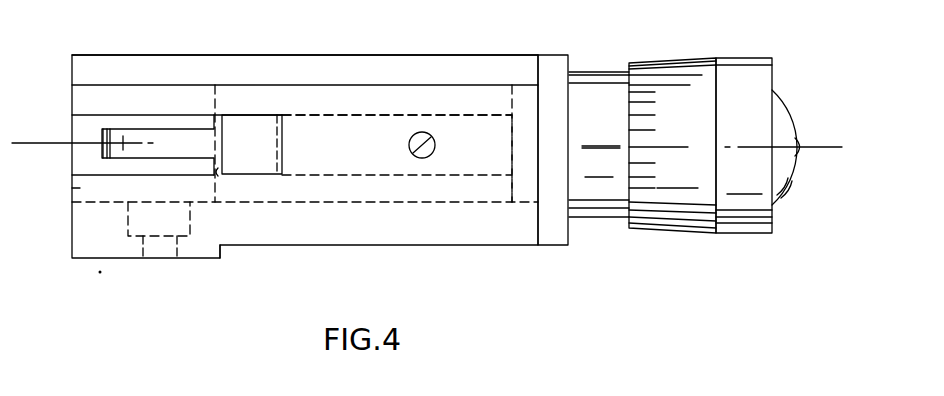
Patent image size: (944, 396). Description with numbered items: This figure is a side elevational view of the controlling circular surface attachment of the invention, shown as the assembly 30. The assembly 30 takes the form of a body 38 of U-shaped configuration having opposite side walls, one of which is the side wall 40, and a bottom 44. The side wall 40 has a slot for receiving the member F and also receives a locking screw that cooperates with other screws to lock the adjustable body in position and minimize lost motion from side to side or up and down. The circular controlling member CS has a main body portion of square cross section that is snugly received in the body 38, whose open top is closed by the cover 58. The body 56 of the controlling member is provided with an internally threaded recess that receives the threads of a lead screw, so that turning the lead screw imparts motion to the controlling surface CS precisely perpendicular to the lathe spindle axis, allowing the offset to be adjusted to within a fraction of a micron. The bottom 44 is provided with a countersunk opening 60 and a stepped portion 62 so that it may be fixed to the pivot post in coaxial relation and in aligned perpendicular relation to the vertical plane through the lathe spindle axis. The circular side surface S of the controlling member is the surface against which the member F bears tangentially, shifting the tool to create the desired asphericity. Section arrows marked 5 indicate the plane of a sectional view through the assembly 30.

The assembly 30 is at (554, 46).
The body 38 is at (391, 246).
The side wall 40 is at (482, 190).
The bottom 44 is at (100, 202).
The body 56 is at (218, 176).
The cover 58 is at (369, 61).
The countersunk opening 60 is at (177, 240).
The stepped portion 62 is at (221, 249).
The circular controlling surface CS is at (178, 129).
The circular side surface S is at (143, 156).
The section line 5- 5 is at (28, 115).